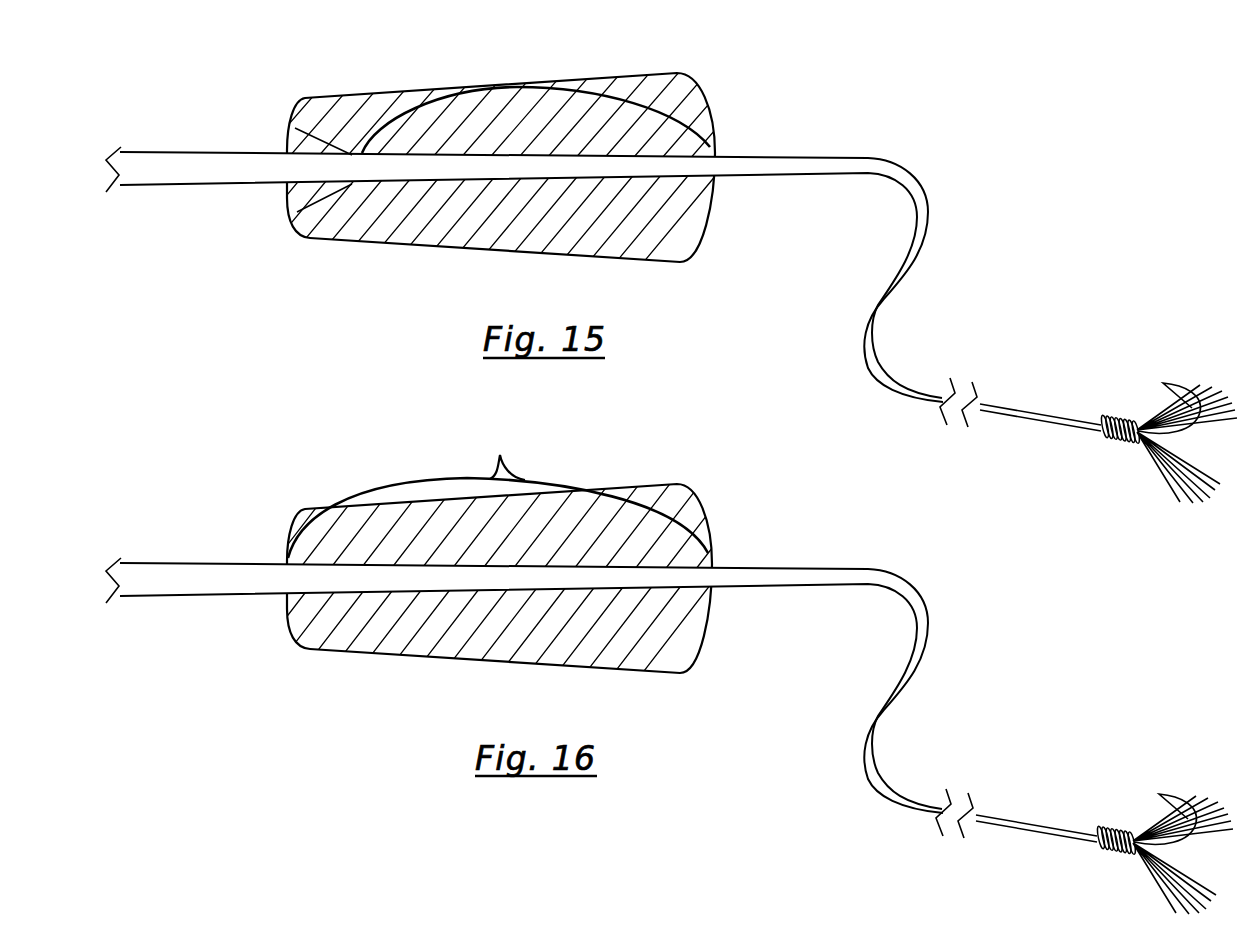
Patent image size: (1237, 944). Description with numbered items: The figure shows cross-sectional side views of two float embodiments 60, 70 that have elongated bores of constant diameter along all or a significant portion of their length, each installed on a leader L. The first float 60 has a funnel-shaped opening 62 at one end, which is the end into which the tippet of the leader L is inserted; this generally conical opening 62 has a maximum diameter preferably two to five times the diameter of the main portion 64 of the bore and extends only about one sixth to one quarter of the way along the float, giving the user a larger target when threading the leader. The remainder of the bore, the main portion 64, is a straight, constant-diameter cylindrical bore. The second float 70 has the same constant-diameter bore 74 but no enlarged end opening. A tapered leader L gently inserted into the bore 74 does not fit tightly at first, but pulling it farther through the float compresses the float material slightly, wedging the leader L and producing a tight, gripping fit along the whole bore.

In FIG. 15, the float 60 is at (396, 78).
In FIG. 15, the funnel-shaped opening 62 is at (302, 145).
In FIG. 15, the main portion of the bore 64 is at (533, 87).
In FIG. 15, the leader L is at (778, 163).
In FIG. 16, the leader L is at (669, 710).
In FIG. 16, the float 70 is at (503, 557).
In FIG. 16, the constant-diameter bore 74 is at (498, 488).